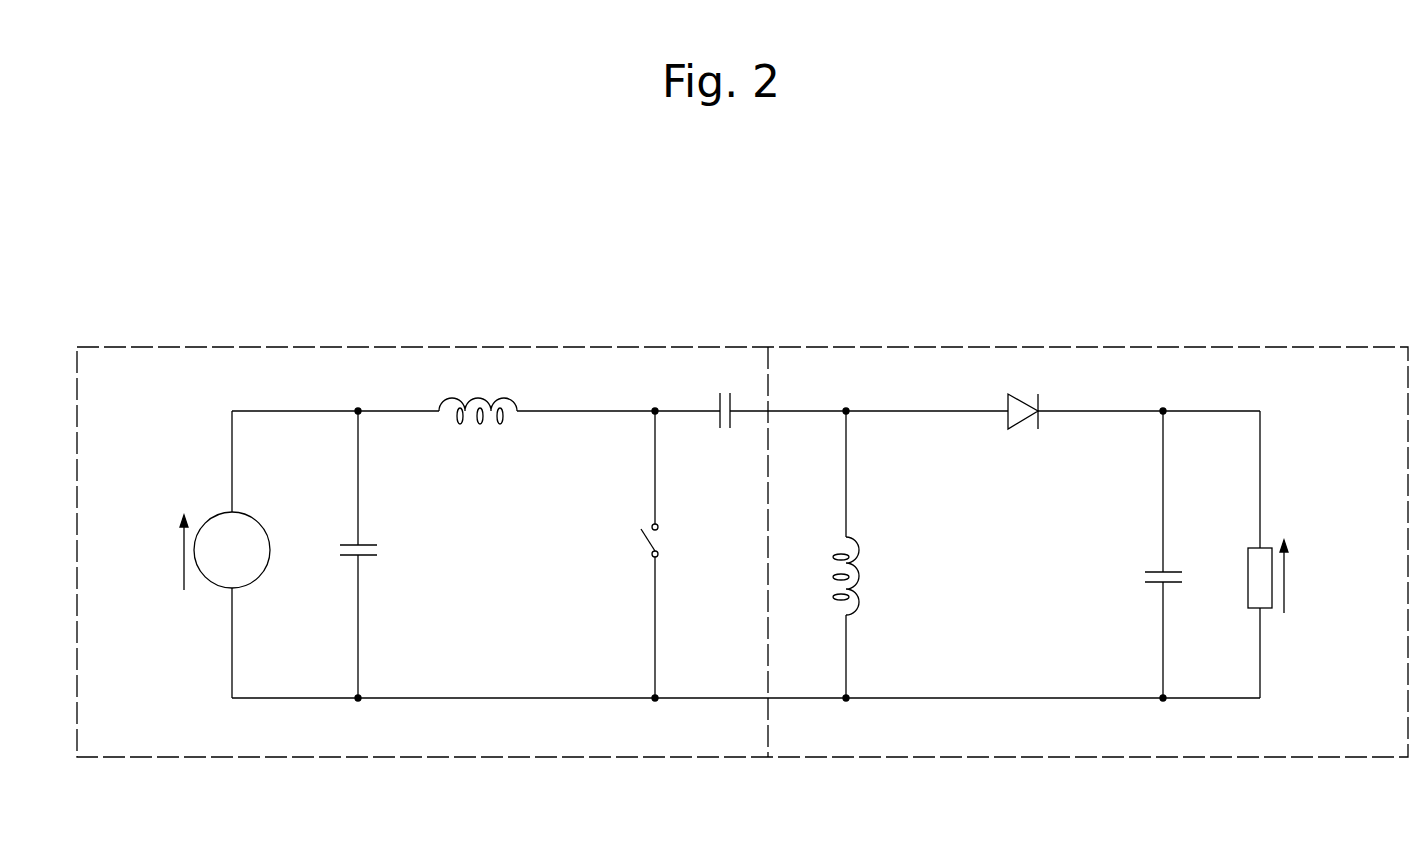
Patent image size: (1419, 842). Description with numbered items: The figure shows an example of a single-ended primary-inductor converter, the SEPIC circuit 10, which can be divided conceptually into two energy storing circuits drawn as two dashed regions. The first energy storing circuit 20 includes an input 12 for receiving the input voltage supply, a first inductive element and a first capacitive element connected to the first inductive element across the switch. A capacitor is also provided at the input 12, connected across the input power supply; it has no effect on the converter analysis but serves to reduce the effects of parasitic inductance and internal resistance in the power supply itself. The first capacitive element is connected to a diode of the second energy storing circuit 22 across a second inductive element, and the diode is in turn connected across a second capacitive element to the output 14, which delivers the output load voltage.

The SEPIC circuit 10 is at (232, 195).
The input 12 is at (140, 490).
The output 14 is at (1345, 517).
The first energy storing circuit 20 is at (457, 328).
The second energy storing circuit 22 is at (1015, 327).